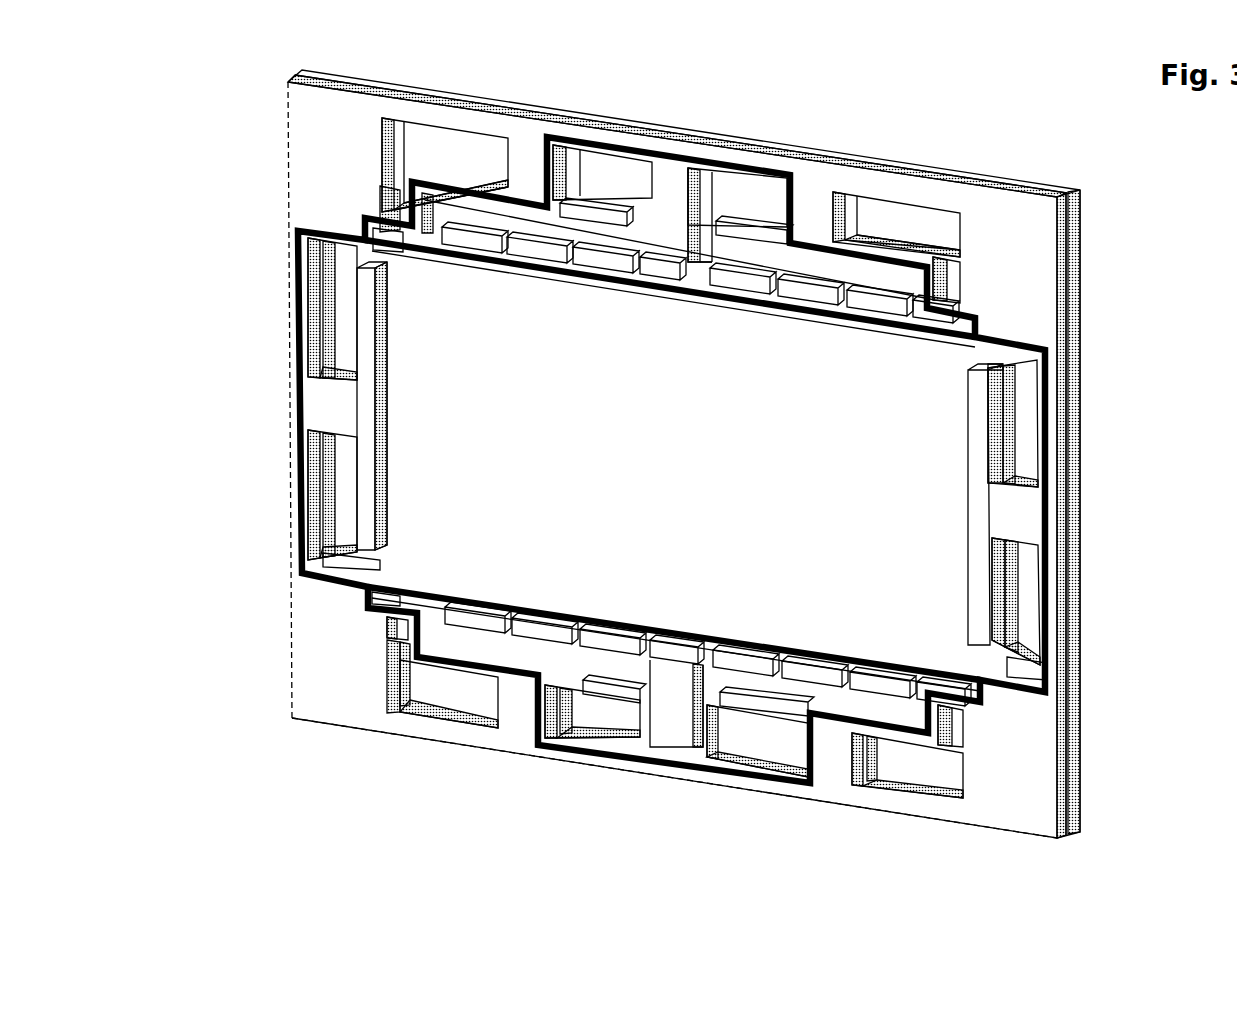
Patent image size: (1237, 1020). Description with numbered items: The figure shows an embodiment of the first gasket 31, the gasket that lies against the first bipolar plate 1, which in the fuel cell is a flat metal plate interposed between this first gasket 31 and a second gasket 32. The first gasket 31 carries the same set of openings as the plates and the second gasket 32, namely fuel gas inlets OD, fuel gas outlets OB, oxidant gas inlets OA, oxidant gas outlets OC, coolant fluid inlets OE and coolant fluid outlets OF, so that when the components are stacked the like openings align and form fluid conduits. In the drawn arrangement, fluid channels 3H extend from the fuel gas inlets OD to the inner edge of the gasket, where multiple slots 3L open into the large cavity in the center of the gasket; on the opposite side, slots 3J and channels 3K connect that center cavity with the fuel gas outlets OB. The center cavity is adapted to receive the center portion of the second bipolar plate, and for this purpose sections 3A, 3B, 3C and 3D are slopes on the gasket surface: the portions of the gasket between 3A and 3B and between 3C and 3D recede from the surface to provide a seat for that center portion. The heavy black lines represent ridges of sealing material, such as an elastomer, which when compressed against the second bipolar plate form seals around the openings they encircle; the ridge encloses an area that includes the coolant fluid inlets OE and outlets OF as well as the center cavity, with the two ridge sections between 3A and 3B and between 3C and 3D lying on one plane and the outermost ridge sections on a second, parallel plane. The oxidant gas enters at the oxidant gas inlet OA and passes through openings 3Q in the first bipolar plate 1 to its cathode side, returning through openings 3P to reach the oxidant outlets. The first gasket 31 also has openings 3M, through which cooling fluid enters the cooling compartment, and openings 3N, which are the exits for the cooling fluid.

The first bipolar plate 1 is at (455, 407).
The first gasket 31 is at (312, 123).
The second gasket 32 is at (372, 78).
The sloped section 3A is at (388, 240).
The sloped section 3B is at (958, 333).
The sloped section 3C is at (963, 688).
The sloped section 3D is at (396, 588).
The fluid channels 3H is at (718, 250).
The slots 3J is at (848, 682).
The channels 3K is at (716, 680).
The slots 3L is at (843, 293).
The openings 3M is at (320, 563).
The openings 3N is at (378, 258).
The openings 3P is at (397, 196).
The openings 3Q is at (400, 628).
The oxidant gas inlets OA is at (452, 690).
The fuel gas outlets OB is at (615, 712).
The oxidant gas outlets OC is at (465, 150).
The fuel gas inlets OD is at (625, 165).
The coolant fluid inlets OE is at (345, 492).
The coolant fluid outlets OF is at (335, 310).